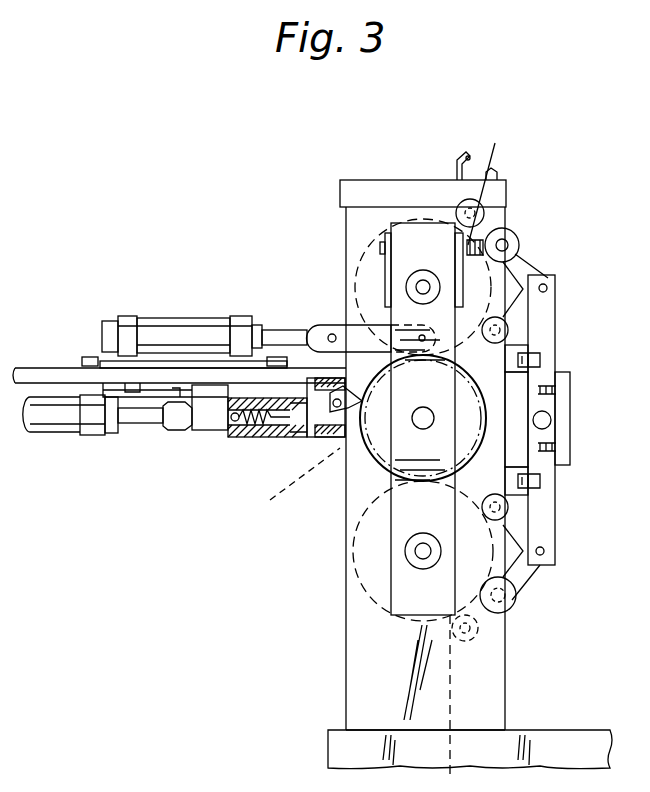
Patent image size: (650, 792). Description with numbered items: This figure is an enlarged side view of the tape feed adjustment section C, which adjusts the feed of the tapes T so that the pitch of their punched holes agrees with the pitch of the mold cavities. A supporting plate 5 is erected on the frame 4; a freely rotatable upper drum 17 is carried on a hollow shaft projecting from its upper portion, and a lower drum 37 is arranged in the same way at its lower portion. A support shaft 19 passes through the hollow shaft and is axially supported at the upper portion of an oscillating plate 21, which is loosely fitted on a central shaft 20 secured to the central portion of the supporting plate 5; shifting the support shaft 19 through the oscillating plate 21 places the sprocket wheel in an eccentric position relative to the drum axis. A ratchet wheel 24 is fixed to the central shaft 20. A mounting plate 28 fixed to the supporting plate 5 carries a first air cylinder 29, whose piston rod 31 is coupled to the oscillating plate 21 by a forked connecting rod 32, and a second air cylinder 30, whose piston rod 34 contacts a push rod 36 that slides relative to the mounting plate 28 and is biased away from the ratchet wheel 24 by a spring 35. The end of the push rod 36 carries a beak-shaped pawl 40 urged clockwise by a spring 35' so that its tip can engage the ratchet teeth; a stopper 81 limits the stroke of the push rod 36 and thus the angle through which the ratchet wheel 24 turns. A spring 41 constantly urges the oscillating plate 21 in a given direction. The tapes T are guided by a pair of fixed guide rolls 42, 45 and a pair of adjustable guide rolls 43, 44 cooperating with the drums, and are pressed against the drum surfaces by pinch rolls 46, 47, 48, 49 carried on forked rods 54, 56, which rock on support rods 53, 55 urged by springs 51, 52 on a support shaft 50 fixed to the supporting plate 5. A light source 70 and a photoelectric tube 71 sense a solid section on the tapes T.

The frame 4 is at (588, 736).
The supporting plate 5 is at (494, 688).
The upper drum 17 is at (362, 255).
The support shaft 19 is at (414, 290).
The central shaft 20 is at (420, 428).
The oscillating plate 21 is at (418, 222).
The ratchet wheel 24 is at (421, 540).
The mounting plate 28 is at (52, 368).
The first air cylinder 29 is at (178, 332).
The second air cylinder 30 is at (56, 434).
The piston rod 31 is at (282, 330).
The forked connecting rod 32 is at (360, 328).
The piston rod 34 is at (126, 434).
The spring 35 is at (205, 439).
The spring 35' is at (290, 489).
The push rod 36 is at (196, 432).
The lower drum 37 is at (352, 615).
The beak-shaped pawl 40 is at (345, 438).
The spring 41 is at (488, 248).
The fixed guide roll 42 is at (484, 208).
The adjustable guide roll 43 is at (540, 346).
The adjustable guide roll 44 is at (545, 494).
The fixed guide roll 45 is at (480, 651).
The pinch roll 46 is at (519, 240).
The pinch roll 47 is at (508, 326).
The pinch roll 48 is at (508, 512).
The pinch roll 49 is at (517, 612).
The support shaft 50 is at (551, 420).
The spring 51 is at (570, 381).
The spring 52 is at (570, 440).
The support rod 53 is at (548, 294).
The forked rod 54 is at (534, 264).
The support rod 55 is at (548, 556).
The forked rod 56 is at (532, 590).
The light source 70 is at (497, 172).
The photoelectric tube 71 is at (457, 170).
The stopper 81 is at (162, 424).
The tapes T is at (493, 148).
The tape feed adjustment section C is at (248, 233).